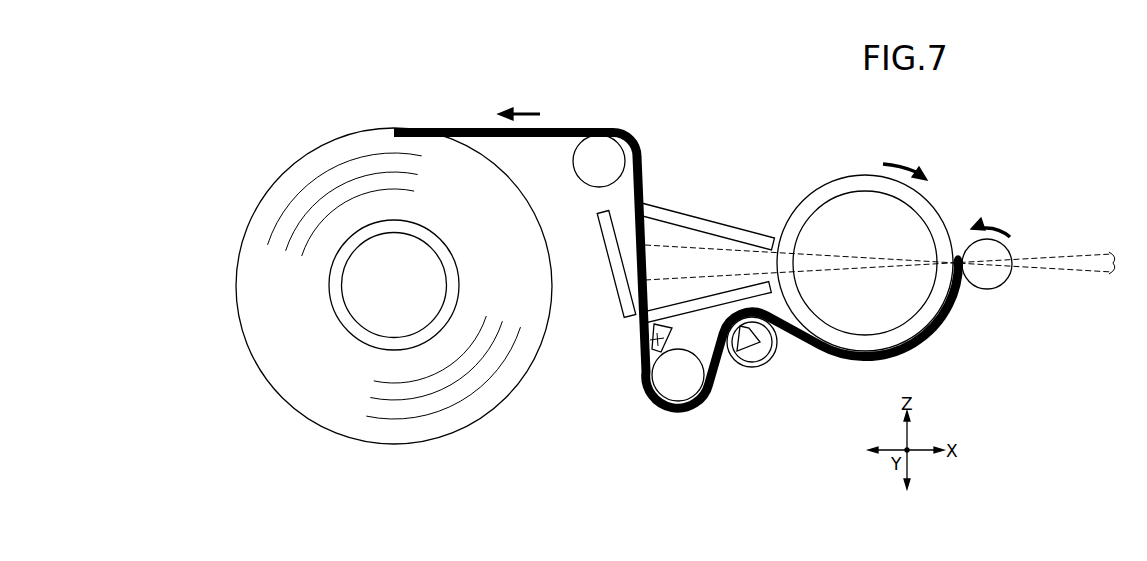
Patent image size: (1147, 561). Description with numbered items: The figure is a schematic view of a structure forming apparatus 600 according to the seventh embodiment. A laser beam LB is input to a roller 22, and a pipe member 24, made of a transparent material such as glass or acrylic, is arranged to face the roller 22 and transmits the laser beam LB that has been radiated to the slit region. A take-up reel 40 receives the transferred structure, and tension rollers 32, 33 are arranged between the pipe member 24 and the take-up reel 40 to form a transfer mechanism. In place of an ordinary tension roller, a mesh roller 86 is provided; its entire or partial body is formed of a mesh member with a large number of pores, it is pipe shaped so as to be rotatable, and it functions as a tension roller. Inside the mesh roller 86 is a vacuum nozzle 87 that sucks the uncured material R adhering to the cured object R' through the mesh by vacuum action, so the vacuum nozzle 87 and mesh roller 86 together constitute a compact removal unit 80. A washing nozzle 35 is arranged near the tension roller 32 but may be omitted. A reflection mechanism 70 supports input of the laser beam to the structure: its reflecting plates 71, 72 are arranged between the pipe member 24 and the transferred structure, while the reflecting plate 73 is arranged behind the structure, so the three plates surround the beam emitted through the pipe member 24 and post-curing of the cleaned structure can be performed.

The structure forming apparatus 600 is at (714, 78).
The take-up reel 40 is at (360, 337).
The tension roller 33 is at (602, 150).
The reflecting plate 73 is at (622, 288).
The washing nozzle 35 is at (638, 338).
The tension roller 32 is at (675, 387).
The reflection mechanism 70 is at (707, 232).
The reflecting plate 71 is at (717, 230).
The reflecting plate 72 is at (742, 292).
The laser beam LB is at (1077, 258).
The pipe member 24 is at (827, 188).
The uncured material R is at (959, 235).
The roller 22 is at (985, 282).
The cured object R' is at (851, 386).
The removal unit 80 is at (755, 379).
The mesh roller 86 is at (760, 366).
The vacuum nozzle 87 is at (743, 368).